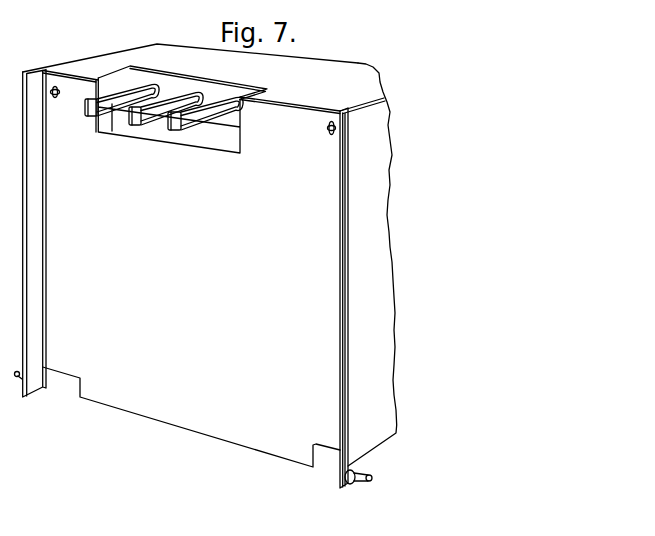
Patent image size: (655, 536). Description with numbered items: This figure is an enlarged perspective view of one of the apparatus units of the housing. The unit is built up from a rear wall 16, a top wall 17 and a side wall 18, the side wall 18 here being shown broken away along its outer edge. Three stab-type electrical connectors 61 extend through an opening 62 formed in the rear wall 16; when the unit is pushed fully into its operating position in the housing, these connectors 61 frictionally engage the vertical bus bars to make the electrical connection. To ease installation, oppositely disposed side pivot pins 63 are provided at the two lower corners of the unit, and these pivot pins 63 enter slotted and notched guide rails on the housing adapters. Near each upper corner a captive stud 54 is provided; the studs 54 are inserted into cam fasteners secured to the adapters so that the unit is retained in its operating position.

The rear wall 16 is at (213, 424).
The top wall 17 is at (329, 63).
The side wall 18 is at (368, 438).
The captive stud 54 is at (58, 97).
The electrical connector 61 is at (173, 132).
The opening 62 is at (214, 143).
The side pivot pin 63 is at (354, 482).